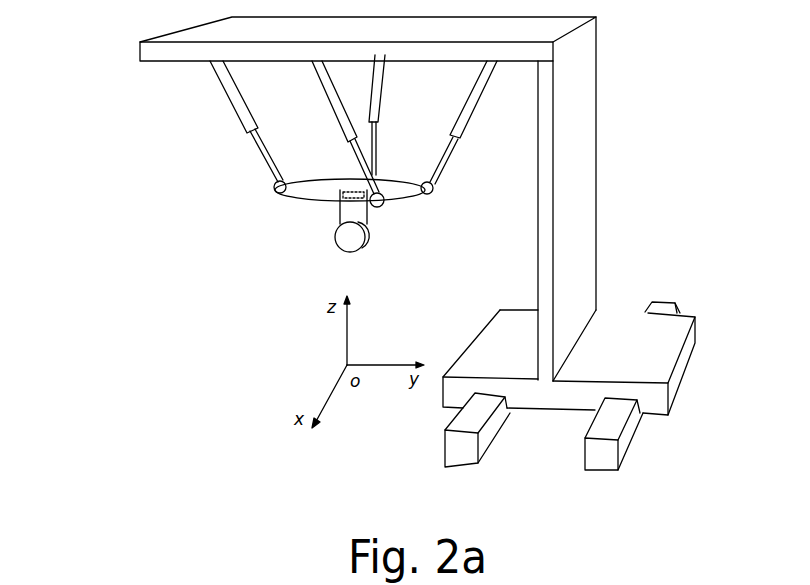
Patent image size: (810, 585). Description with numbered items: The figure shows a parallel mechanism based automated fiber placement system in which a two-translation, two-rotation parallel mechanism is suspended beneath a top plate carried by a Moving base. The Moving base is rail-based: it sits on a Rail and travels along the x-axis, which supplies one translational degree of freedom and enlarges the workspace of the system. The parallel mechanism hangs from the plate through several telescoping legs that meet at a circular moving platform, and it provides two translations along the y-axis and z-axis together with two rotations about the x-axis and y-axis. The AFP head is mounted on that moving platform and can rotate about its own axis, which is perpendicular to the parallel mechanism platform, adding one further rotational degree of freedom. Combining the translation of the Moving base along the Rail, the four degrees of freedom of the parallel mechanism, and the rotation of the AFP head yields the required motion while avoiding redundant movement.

The element AFP head is at (328, 232).
The moving base Moving base is at (602, 280).
The rail Rail is at (635, 435).